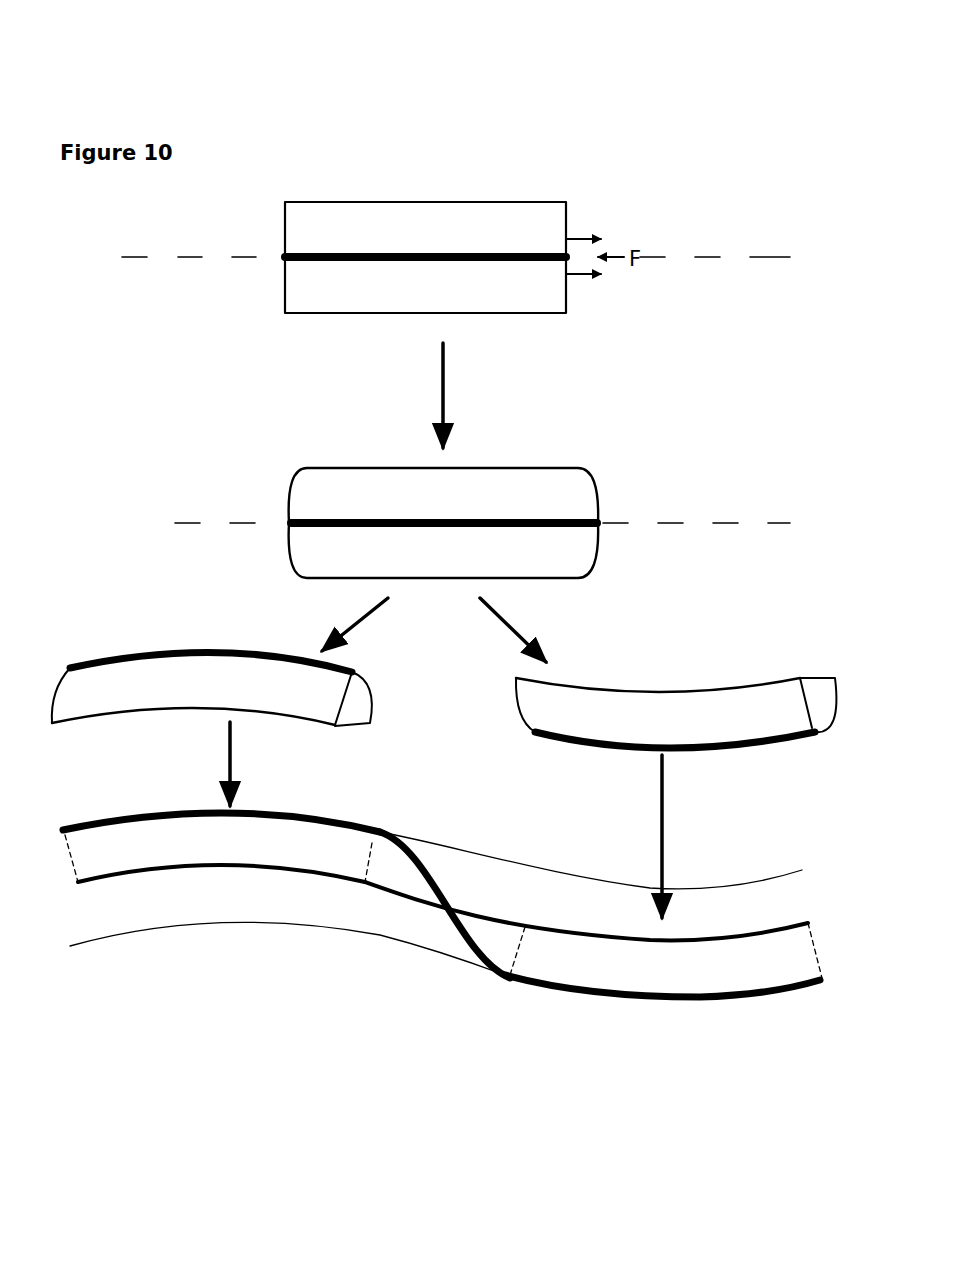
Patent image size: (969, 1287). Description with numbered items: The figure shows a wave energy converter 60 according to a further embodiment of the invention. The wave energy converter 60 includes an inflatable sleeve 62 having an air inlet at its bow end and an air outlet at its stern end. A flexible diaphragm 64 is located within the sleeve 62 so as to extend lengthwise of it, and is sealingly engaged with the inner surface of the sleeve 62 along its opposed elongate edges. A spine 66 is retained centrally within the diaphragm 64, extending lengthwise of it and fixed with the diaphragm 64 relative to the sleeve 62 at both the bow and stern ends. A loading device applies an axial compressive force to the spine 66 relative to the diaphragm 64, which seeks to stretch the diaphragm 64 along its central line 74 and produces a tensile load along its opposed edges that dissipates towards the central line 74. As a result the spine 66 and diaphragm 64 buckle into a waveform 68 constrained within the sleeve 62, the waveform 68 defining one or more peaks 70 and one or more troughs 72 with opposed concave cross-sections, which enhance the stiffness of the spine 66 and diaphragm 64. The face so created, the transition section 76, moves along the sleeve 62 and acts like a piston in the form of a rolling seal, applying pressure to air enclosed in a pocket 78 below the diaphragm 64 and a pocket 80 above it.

The wave energy converter 60 is at (442, 580).
The inflatable sleeve 62 is at (111, 935).
The flexible diaphragm 64 is at (531, 222).
The spine 66 is at (403, 252).
The waveform 68 is at (489, 899).
The peak 70 is at (279, 802).
The trough 72 is at (665, 1006).
The central line 74 is at (185, 257).
The transition section 76 is at (447, 909).
The pocket 78 is at (225, 916).
The pocket 80 is at (760, 920).